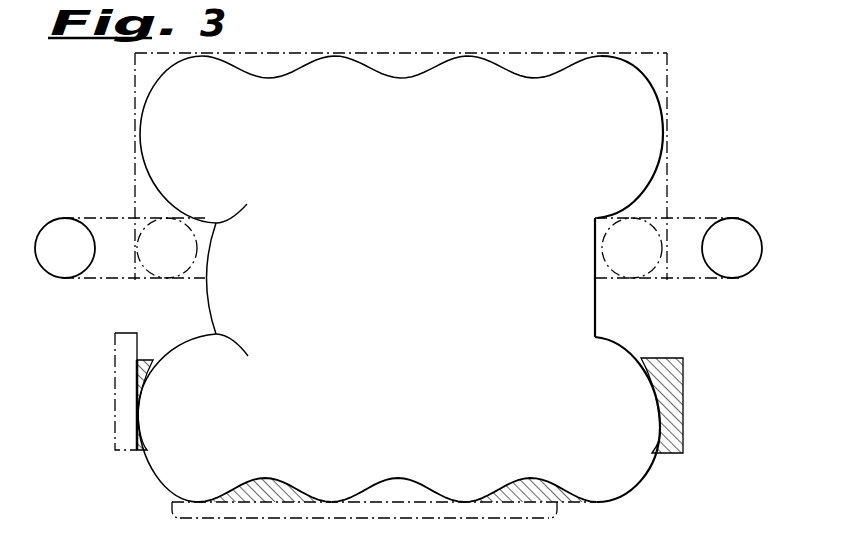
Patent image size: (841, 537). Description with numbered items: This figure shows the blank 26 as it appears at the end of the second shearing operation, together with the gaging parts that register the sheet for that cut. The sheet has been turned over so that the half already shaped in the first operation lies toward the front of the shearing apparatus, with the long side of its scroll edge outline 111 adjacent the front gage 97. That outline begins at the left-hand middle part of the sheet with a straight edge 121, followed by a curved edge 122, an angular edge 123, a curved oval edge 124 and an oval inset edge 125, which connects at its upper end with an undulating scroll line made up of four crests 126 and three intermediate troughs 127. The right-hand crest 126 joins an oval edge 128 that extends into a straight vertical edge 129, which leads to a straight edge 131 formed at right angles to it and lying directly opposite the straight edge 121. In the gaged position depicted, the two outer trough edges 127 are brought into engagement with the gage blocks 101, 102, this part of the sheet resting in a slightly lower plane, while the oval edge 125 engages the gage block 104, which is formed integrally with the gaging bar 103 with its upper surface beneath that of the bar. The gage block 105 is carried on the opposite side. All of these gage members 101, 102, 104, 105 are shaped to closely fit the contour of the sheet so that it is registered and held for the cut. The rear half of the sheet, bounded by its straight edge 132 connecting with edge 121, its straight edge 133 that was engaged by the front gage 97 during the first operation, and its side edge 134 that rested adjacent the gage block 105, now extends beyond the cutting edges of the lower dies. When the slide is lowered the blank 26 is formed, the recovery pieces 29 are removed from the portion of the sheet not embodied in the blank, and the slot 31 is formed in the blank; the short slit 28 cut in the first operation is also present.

The blank 26 is at (482, 80).
The slit 28 is at (234, 204).
The recovery pieces 29 is at (59, 227).
The slot 31 is at (237, 343).
The gage 97 is at (395, 519).
The gage block 101 is at (276, 505).
The gage block 102 is at (535, 503).
The gaging bar 103 is at (116, 437).
The gage block 104 is at (136, 373).
The gage block 105 is at (684, 373).
The scroll edge outline 111 is at (413, 479).
The straight edge 121 is at (178, 283).
The curved edge 122 is at (207, 300).
The angular edge 123 is at (219, 225).
The curved oval edge 124 is at (181, 212).
The oval inset edge 125 is at (140, 137).
The crests 126 is at (335, 58).
The troughs 127 is at (277, 81).
The oval edge 128 is at (662, 163).
The straight vertical edge 129 is at (596, 312).
The straight edge 131 is at (645, 281).
The straight edge 132 is at (136, 75).
The straight edge 133 is at (392, 53).
The side edge 134 is at (668, 102).